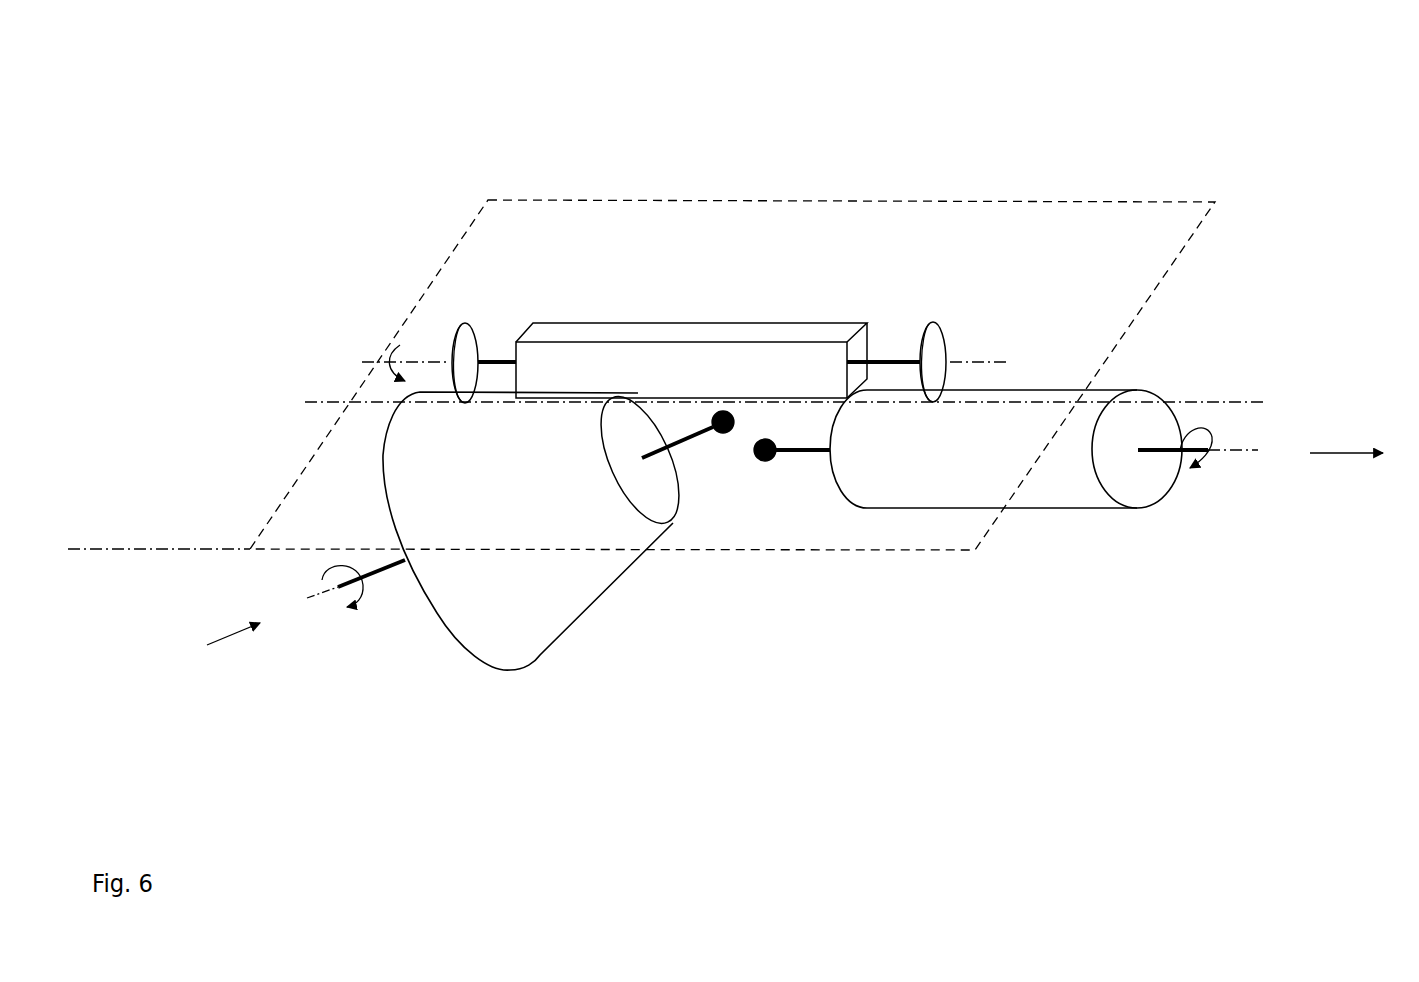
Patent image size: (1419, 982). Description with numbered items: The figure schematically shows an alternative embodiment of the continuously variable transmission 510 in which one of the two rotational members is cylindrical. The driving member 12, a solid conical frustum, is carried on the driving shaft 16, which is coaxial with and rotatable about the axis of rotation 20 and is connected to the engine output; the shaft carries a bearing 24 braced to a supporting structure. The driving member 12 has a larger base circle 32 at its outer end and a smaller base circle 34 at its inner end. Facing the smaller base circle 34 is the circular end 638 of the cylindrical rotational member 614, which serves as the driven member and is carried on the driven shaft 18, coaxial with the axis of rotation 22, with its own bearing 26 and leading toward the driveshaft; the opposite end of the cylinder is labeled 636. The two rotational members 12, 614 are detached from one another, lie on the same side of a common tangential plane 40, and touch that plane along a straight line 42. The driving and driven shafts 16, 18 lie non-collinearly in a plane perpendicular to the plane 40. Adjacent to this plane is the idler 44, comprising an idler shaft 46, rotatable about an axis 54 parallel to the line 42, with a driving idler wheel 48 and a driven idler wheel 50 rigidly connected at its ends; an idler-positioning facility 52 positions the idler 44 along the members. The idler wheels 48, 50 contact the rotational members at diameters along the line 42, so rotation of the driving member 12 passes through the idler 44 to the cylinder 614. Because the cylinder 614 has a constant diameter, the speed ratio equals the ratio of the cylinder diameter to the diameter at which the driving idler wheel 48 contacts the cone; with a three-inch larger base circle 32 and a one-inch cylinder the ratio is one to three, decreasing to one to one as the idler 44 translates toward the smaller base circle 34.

The power transfer system 510 is at (197, 140).
The idler 44 is at (832, 252).
The straight line 42 is at (1242, 402).
The axis 54 is at (362, 362).
The driving member 12 is at (541, 578).
The larger base circle 32 is at (432, 622).
The smaller base circle 34 is at (655, 498).
The driving shaft 16 is at (367, 573).
The axis of rotation 20 is at (307, 598).
The driving idler wheel 48 is at (467, 323).
The idler shaft 46 is at (492, 360).
The idler-positioning facility 52 is at (585, 335).
The driven idler wheel 50 is at (933, 323).
The bearing 24 is at (727, 440).
The bearing 26 is at (768, 462).
The common tangential plane 40 is at (1049, 468).
The cylindrical rotational member 614 is at (1013, 510).
The circular end 638 is at (828, 480).
The cylinder end face 636 is at (1117, 472).
The axis of rotation 22 is at (1265, 457).
The driven shaft 18 is at (1207, 457).